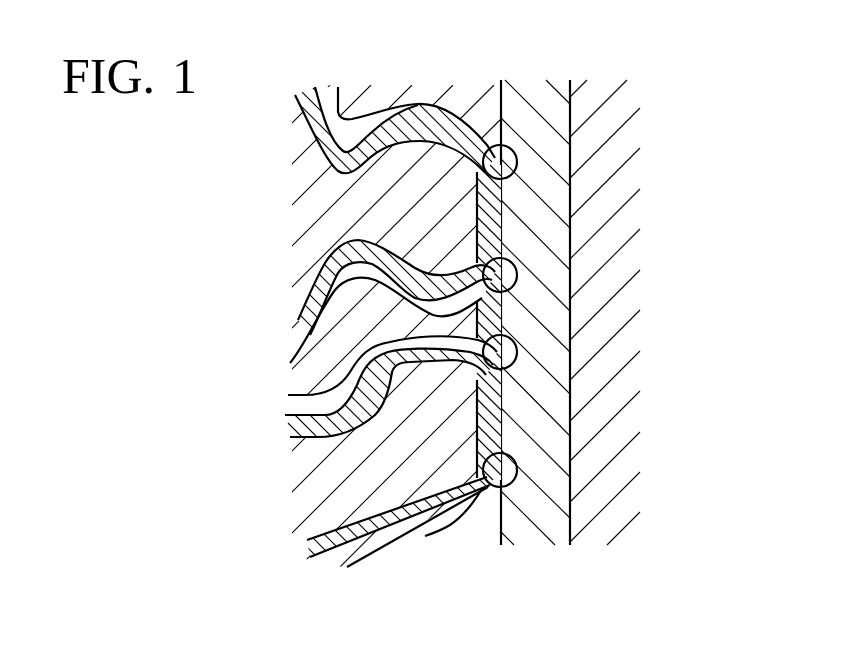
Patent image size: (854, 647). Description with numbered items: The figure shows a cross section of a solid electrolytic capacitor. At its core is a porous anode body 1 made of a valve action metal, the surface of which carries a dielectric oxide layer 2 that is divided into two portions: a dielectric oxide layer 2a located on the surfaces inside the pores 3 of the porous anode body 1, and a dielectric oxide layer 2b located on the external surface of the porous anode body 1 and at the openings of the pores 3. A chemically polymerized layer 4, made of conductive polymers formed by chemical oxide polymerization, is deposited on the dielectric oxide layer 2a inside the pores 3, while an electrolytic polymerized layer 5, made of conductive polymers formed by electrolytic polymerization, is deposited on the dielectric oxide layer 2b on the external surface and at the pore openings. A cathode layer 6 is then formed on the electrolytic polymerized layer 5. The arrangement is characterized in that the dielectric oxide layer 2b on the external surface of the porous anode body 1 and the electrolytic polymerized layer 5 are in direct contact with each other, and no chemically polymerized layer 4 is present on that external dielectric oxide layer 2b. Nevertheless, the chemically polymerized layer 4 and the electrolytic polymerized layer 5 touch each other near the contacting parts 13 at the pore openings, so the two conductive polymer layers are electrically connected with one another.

The porous anode body 1 is at (320, 213).
The dielectric oxide layer 2 is at (490, 36).
The dielectric oxide layer 2a is at (422, 133).
The dielectric oxide layer 2b is at (475, 192).
The pores 3 is at (377, 93).
The chemically polymerized layer 4 is at (330, 90).
The electrolytic polymerized layer 5 is at (537, 107).
The cathode layer 6 is at (613, 110).
The contacting parts 13 is at (517, 162).